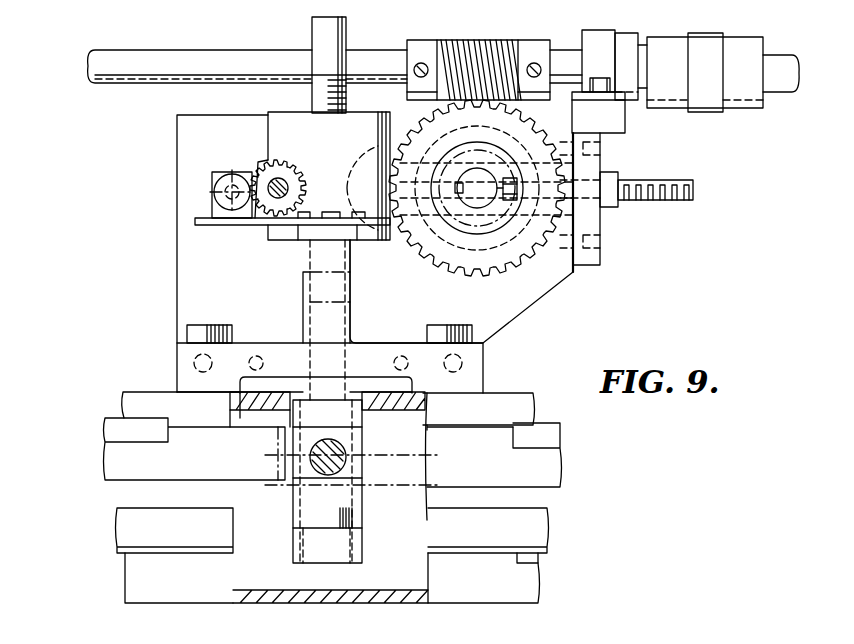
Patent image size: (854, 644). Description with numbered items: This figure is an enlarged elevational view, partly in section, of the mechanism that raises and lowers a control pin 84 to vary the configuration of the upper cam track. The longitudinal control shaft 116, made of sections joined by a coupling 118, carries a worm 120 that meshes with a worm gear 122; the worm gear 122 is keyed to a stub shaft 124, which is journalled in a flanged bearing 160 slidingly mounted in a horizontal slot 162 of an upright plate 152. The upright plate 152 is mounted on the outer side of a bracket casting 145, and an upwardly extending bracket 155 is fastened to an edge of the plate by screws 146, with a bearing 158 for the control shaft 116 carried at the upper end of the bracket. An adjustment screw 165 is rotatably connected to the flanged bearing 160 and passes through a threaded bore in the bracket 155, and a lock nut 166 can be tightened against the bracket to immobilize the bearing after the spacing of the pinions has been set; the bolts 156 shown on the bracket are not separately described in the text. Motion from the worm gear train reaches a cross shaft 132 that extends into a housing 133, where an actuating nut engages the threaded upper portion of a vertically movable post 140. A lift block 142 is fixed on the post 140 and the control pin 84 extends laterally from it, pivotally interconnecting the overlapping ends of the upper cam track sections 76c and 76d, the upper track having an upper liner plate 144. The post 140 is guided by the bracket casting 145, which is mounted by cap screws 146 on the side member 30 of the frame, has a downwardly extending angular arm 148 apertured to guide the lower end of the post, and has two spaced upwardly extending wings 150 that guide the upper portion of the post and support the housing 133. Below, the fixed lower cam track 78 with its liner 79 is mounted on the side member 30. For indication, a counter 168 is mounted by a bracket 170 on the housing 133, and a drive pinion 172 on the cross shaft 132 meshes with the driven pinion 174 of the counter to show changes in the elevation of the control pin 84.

The longitudinal control shaft 116 is at (215, 62).
The vertically movable post 140 is at (372, 20).
The worm 120 is at (467, 42).
The bearing 158 is at (600, 38).
The coupling 118 is at (715, 113).
The housing 133 is at (280, 117).
The counter 168 is at (212, 190).
The cross shaft 132 is at (283, 180).
The drive pinion 172 is at (307, 173).
The driven pinion 174 is at (233, 175).
The bracket 170 is at (227, 223).
The flanged bearing 160 is at (478, 145).
The horizontal slot 162 is at (420, 163).
The stub shaft 124 is at (480, 200).
The upwardly extending bracket 155 is at (600, 218).
The bolts 156 is at (607, 140).
The lock nut 166 is at (612, 178).
The adjustment screw 165 is at (680, 200).
The upright plate 152 is at (560, 283).
The worm gear 122 is at (513, 267).
The upwardly extending wings 150 is at (305, 265).
The bracket casting 145 is at (265, 340).
The cap screws 146 is at (430, 337).
The side member 30 is at (517, 392).
The upper liner plate 144 is at (437, 430).
The upper cam track section 76c is at (122, 455).
The control pin 84 is at (287, 455).
The lift block 142 is at (357, 470).
The angular arm 148 is at (358, 515).
The upper cam track section 76d is at (547, 465).
The lower cam track 78 is at (533, 528).
The liner 79 is at (537, 563).